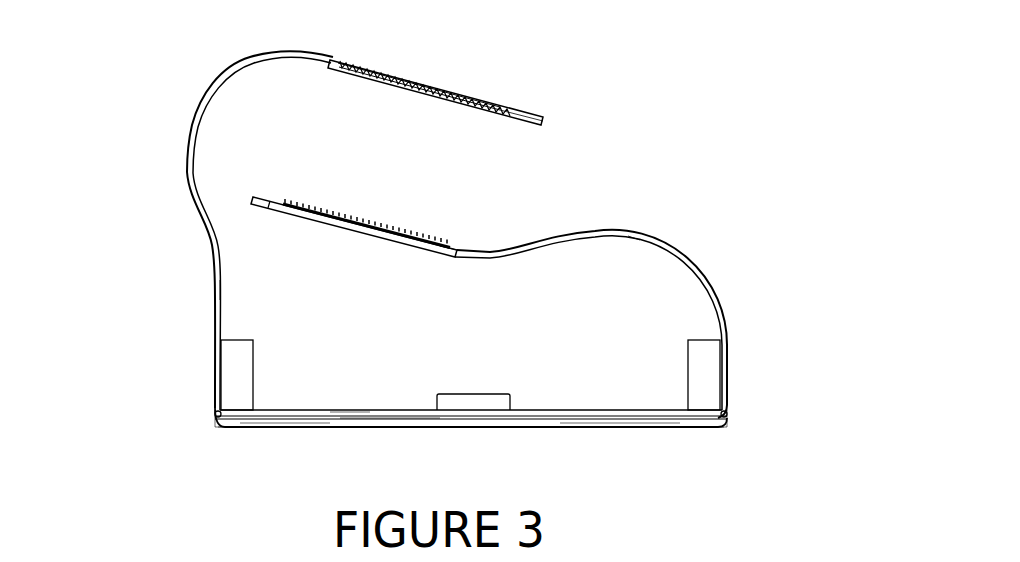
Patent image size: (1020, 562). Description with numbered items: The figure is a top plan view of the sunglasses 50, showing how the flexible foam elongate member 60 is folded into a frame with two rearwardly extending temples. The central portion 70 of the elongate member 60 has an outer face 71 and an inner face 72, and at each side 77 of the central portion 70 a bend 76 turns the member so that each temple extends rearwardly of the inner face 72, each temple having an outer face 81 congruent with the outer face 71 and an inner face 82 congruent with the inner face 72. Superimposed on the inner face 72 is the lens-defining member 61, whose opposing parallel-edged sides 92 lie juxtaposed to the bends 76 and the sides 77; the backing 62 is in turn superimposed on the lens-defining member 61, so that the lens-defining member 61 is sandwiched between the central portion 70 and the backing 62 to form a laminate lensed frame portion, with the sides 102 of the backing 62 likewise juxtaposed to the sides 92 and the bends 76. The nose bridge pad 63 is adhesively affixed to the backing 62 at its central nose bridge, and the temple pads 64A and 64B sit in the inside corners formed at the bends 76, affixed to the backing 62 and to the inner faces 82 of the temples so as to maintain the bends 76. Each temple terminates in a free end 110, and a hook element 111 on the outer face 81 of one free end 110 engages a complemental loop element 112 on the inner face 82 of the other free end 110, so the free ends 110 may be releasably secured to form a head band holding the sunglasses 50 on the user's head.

The sunglasses 50 is at (691, 112).
The elongate member 60 is at (718, 287).
The lens-defining member 61 is at (630, 426).
The backing 62 is at (310, 421).
The nose bridge pad 63 is at (485, 395).
The temple pad 64A is at (688, 358).
The temple pad 64B is at (255, 358).
The central portion 70 is at (535, 428).
The outer face 71 is at (385, 430).
The inner face 72 is at (348, 412).
The bend 76 is at (215, 424).
The side 77 is at (226, 429).
The outer face 81 is at (212, 243).
The inner face 82 is at (221, 292).
The sides 92 is at (215, 418).
The sides 102 is at (215, 410).
The free end 110 is at (519, 107).
The element 111 is at (458, 249).
The complemental element 112 is at (500, 118).